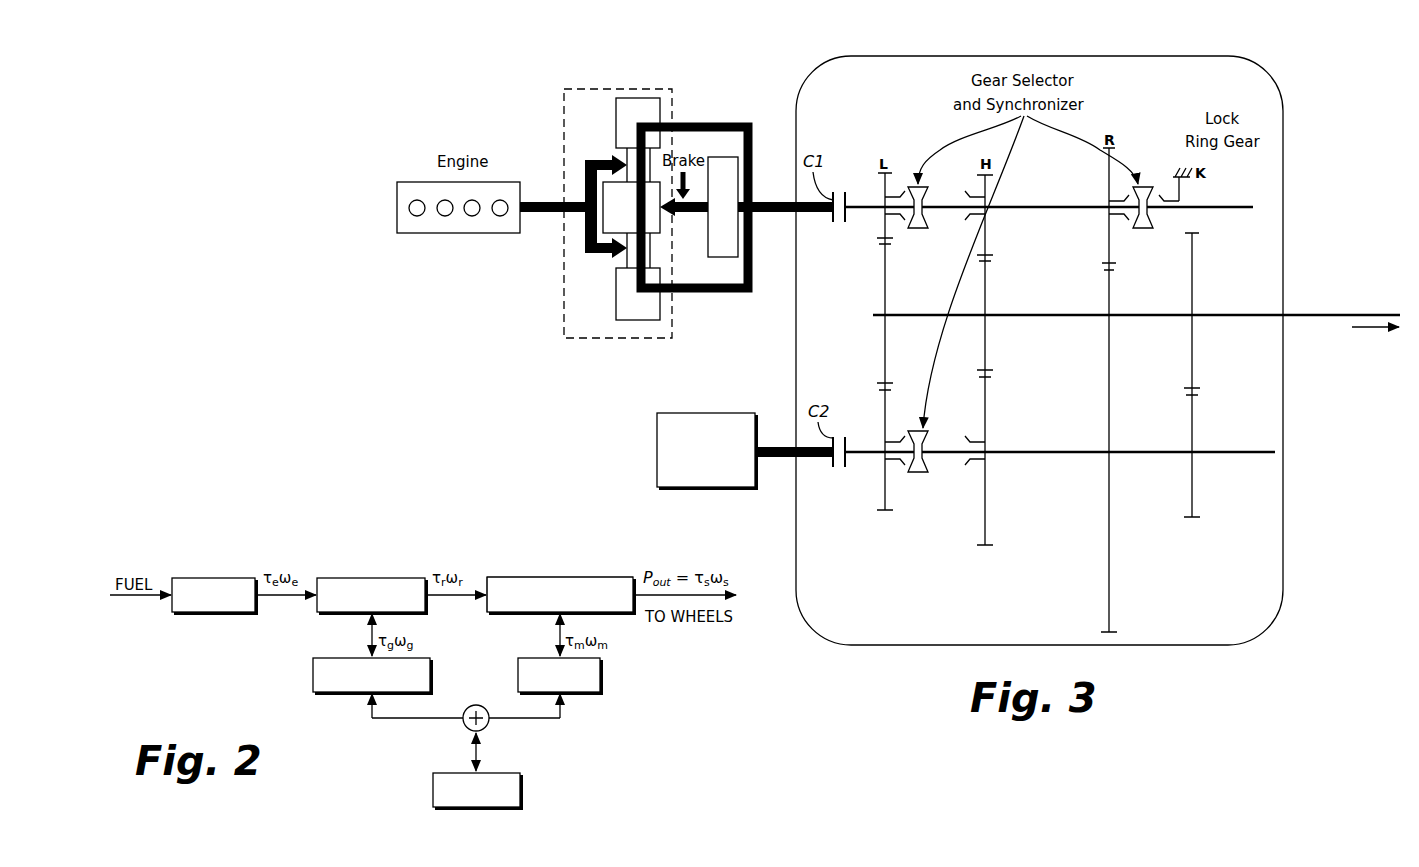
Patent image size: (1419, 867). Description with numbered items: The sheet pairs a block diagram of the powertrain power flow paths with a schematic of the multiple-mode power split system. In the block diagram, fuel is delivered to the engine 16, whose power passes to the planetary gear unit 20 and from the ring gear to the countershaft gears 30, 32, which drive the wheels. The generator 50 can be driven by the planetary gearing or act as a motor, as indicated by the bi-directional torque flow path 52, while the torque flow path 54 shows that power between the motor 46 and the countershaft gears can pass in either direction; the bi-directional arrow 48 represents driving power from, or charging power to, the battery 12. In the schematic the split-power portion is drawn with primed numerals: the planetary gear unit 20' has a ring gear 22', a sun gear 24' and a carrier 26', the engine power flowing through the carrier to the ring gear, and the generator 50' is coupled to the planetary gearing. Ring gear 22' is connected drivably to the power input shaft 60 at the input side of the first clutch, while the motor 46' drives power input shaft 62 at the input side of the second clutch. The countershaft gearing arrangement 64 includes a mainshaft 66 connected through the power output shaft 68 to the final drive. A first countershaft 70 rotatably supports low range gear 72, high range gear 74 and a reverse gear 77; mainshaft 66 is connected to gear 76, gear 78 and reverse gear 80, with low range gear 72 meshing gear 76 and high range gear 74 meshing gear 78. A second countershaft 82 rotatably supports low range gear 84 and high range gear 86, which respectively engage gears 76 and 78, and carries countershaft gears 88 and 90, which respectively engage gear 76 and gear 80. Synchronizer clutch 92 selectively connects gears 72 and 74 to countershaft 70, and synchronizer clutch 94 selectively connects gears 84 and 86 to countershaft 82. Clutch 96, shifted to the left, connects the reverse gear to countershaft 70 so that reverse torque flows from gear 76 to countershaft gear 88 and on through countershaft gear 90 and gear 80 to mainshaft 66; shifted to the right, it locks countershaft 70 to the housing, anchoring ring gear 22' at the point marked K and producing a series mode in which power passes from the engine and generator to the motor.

In FIG. 2, the battery 12 is at (522, 792).
In FIG. 2, the engine 16 is at (213, 613).
In FIG. 2, the planetary gear unit 20 is at (363, 615).
In FIG. 2, the countershaft gear 30 is at (522, 613).
In FIG. 2, the countershaft gear 32 is at (522, 613).
In FIG. 2, the motor 46 is at (573, 697).
In FIG. 2, the bi-directional arrow 48 is at (478, 755).
In FIG. 2, the generator 50 is at (366, 695).
In FIG. 2, the torque flow path 52 is at (413, 720).
In FIG. 2, the torque flow path 54 is at (540, 720).
In FIG. 3, the planetary gear unit 20' is at (578, 201).
In FIG. 3, the ring gear 22' is at (657, 183).
In FIG. 3, the sun gear 24' is at (597, 221).
In FIG. 3, the carrier 26' is at (597, 182).
In FIG. 3, the motor 46' is at (707, 427).
In FIG. 3, the generator 50' is at (714, 197).
In FIG. 3, the power input shaft 60 is at (797, 278).
In FIG. 3, the power input shaft 62 is at (812, 445).
In FIG. 3, the countershaft gearing arrangement 64 is at (1087, 55).
In FIG. 3, the mainshaft 66 is at (1088, 313).
In FIG. 3, the power output shaft 68 is at (1330, 313).
In FIG. 3, the first countershaft 70 is at (1062, 205).
In FIG. 3, the low range gear 72 is at (883, 223).
In FIG. 3, the high range gear 74 is at (987, 250).
In FIG. 3, the reverse gear 76 is at (884, 280).
In FIG. 3, the reverse gear 77 is at (1110, 292).
In FIG. 3, the gear 78 is at (987, 343).
In FIG. 3, the reverse gear 80 is at (1193, 360).
In FIG. 3, the second countershaft 82 is at (1093, 450).
In FIG. 3, the low range gear 84 is at (883, 483).
In FIG. 3, the high range gear 86 is at (987, 510).
In FIG. 3, the countershaft gear 88 is at (1110, 417).
In FIG. 3, the countershaft gear 90 is at (1193, 430).
In FIG. 3, the synchronizer clutch 92 is at (920, 228).
In FIG. 3, the synchronizer clutch 94 is at (918, 430).
In FIG. 3, the clutch 96 is at (1143, 186).